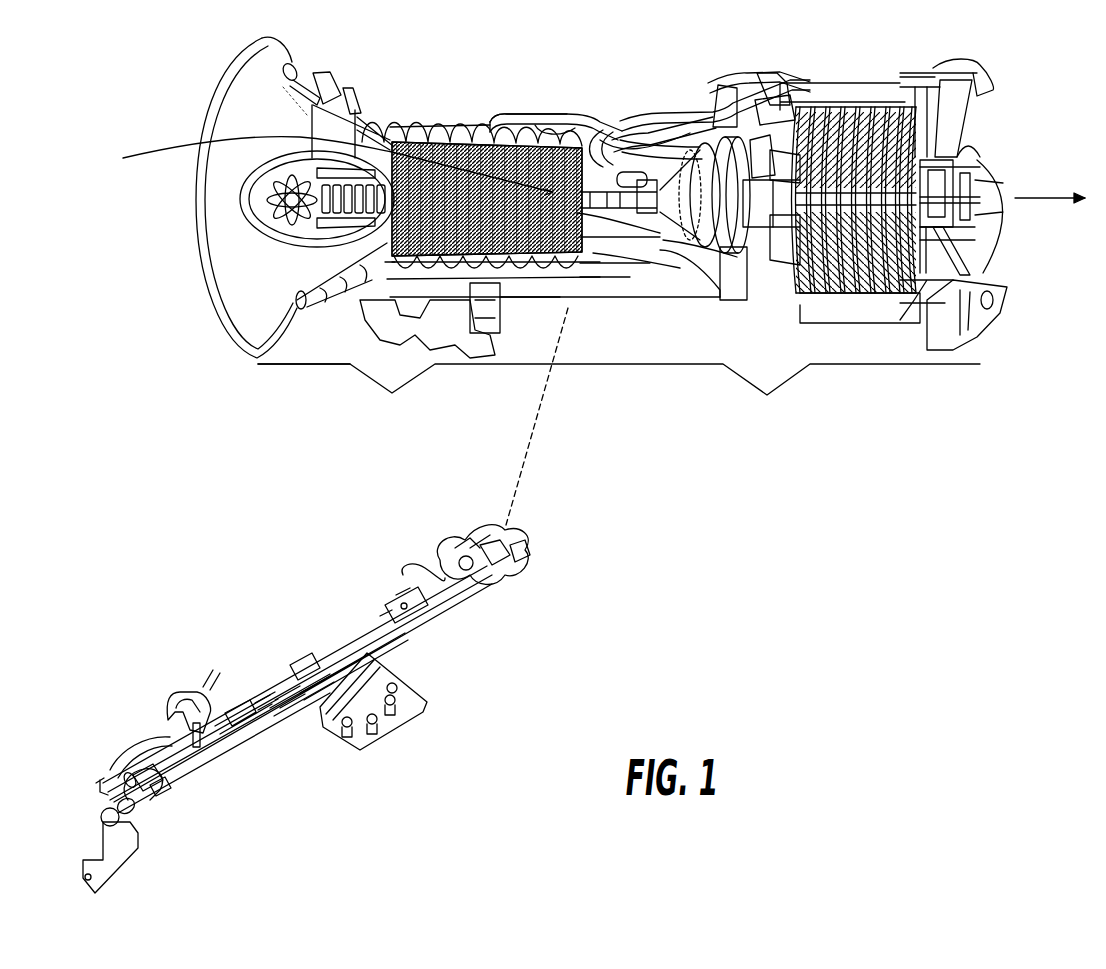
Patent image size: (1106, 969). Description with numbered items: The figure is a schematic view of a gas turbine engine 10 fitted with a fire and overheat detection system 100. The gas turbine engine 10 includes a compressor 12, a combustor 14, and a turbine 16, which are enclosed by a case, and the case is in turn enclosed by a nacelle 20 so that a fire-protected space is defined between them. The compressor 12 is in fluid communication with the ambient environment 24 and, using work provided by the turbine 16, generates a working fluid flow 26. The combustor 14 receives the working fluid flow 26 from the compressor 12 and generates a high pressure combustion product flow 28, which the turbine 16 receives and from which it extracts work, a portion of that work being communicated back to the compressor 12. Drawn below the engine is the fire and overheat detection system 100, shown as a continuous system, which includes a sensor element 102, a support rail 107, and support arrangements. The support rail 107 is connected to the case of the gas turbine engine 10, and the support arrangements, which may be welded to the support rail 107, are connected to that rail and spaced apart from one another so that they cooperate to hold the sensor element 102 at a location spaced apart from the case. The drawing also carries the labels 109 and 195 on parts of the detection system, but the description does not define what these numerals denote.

The gas turbine engine 10 is at (136, 357).
The compressor 12 is at (492, 122).
The combustor 14 is at (662, 250).
The turbine 16 is at (852, 263).
The nacelle 20 is at (312, 365).
The ambient environment 24 is at (524, 336).
The working fluid flow 26 is at (173, 153).
The high pressure combustion product flow 28 is at (1040, 200).
The fire and overheat detection system 100 is at (230, 610).
The sensor element 102 is at (213, 755).
The support rail 107 is at (305, 708).
The fuel tube 109 is at (250, 730).
The clamp 195 is at (420, 618).